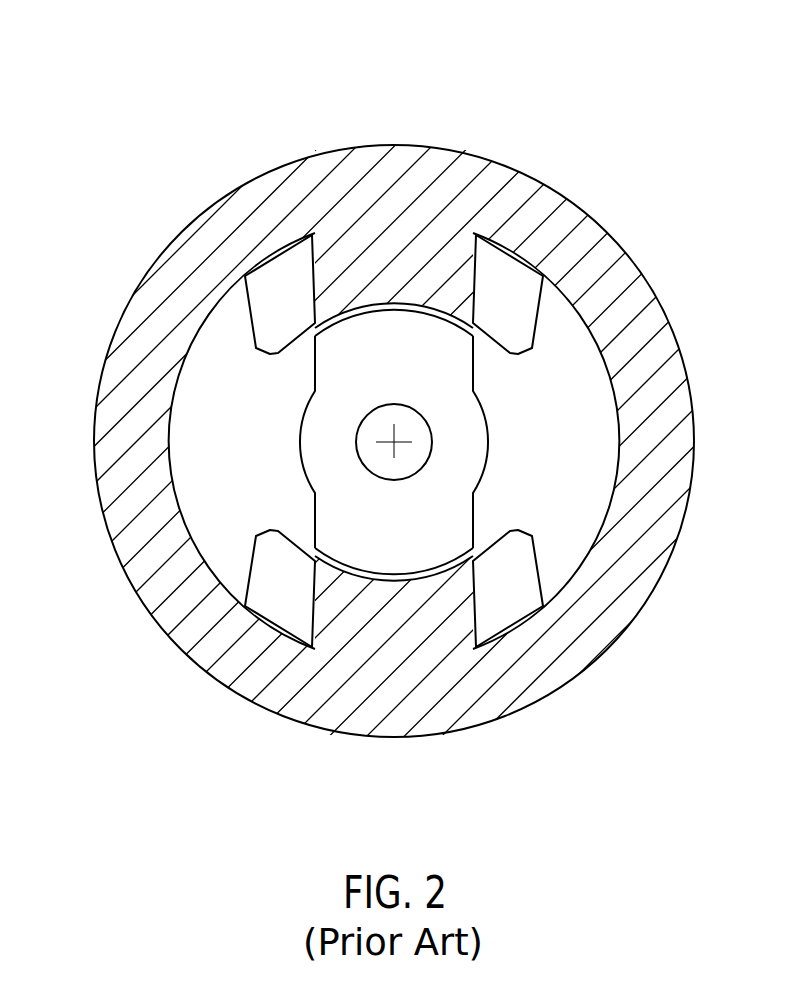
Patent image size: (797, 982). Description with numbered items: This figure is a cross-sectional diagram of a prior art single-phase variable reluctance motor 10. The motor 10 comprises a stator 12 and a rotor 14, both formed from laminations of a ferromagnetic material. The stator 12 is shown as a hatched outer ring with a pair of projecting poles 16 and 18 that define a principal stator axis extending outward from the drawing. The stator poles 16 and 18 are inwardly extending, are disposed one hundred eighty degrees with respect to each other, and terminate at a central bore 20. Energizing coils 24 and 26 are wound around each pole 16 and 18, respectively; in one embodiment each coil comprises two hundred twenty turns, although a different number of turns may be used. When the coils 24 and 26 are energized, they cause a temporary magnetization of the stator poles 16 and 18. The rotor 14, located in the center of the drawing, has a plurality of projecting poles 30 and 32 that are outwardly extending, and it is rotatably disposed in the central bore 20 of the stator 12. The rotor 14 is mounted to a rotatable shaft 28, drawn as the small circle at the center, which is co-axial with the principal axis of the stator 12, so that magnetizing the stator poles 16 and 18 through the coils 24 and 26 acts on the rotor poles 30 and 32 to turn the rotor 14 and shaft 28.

The motor 10 is at (590, 97).
The stator 12 is at (547, 663).
The rotor 14 is at (465, 443).
The projecting pole 16 is at (350, 257).
The projecting pole 18 is at (363, 633).
The central bore 20 is at (313, 552).
The energizing coil 24 is at (510, 278).
The energizing coil 26 is at (273, 610).
The rotatable shaft 28 is at (380, 448).
The projecting pole 30 is at (357, 355).
The projecting pole 32 is at (432, 537).